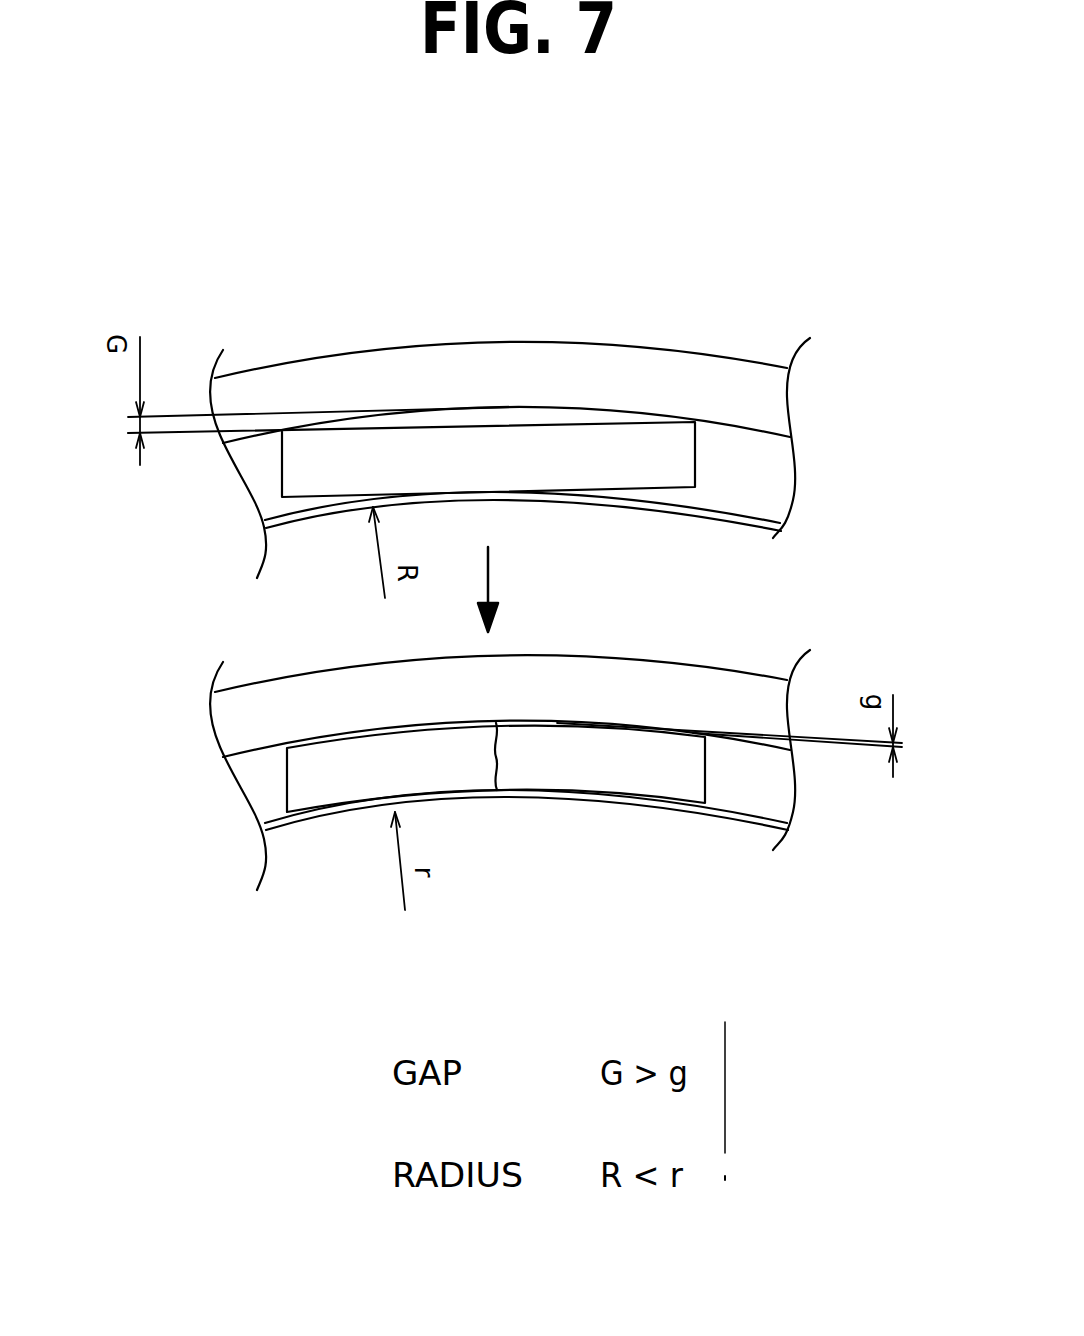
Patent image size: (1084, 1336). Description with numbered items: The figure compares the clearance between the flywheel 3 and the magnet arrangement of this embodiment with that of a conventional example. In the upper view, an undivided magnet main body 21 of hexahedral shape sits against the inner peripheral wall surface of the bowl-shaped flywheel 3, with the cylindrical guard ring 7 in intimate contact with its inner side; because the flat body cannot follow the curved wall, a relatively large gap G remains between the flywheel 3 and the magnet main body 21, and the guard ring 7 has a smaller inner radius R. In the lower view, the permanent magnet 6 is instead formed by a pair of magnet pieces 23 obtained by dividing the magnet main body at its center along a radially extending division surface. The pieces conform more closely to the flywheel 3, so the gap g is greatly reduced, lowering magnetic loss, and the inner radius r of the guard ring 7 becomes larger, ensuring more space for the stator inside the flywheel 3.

The flywheel 3 is at (525, 368).
The magnet main body 21 is at (523, 463).
The guard ring 7 is at (723, 520).
The magnet pieces 23 is at (433, 770).
The permanent magnet 6 is at (515, 767).